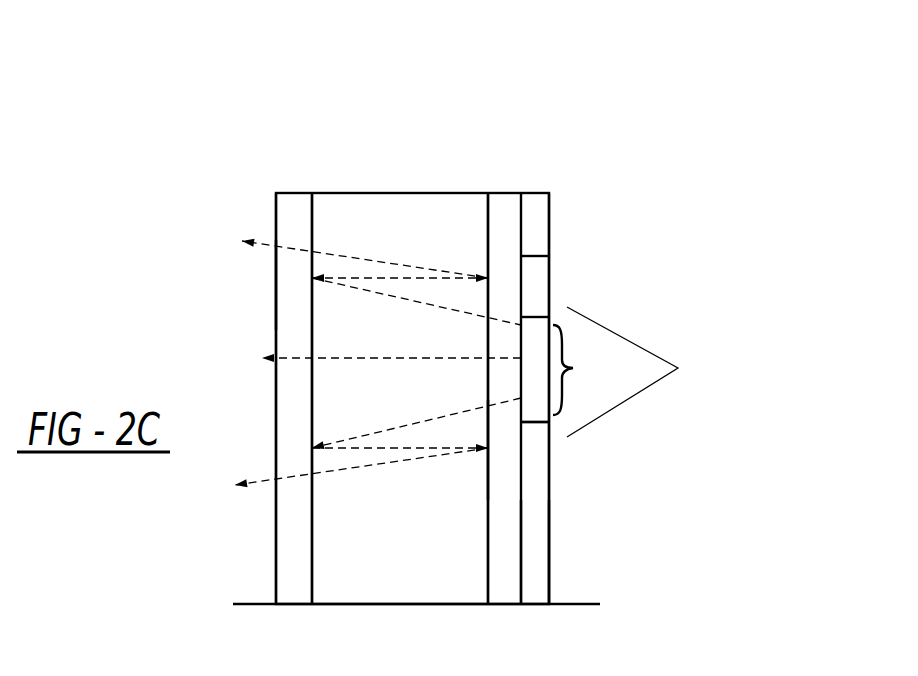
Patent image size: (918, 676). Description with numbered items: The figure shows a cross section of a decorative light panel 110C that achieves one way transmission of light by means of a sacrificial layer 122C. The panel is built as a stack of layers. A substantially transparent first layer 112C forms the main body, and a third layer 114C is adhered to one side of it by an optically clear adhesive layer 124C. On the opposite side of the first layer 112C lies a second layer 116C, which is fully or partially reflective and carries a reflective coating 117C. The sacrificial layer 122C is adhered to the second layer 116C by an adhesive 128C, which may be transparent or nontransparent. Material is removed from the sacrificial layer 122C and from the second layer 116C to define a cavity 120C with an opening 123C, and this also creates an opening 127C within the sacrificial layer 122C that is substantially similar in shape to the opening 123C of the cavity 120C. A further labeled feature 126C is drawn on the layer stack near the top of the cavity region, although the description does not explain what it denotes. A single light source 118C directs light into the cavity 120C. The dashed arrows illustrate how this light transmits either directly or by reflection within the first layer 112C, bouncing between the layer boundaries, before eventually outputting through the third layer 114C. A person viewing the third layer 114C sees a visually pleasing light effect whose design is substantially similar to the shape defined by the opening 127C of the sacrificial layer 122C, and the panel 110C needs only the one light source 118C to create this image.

The panel 110C is at (522, 116).
The first layer 112C is at (375, 213).
The third layer 114C is at (292, 282).
The second layer 116C is at (507, 220).
The reflective coating 117C is at (549, 256).
The light source 118C is at (596, 399).
The cavity 120C is at (578, 373).
The sacrificial layer 122C is at (537, 520).
The opening of the cavity 123C is at (519, 406).
The optically clear adhesive layer 124C is at (313, 207).
The upper segment 126C is at (488, 295).
The opening of the sacrificial layer 127C is at (535, 407).
The adhesive 128C is at (521, 570).